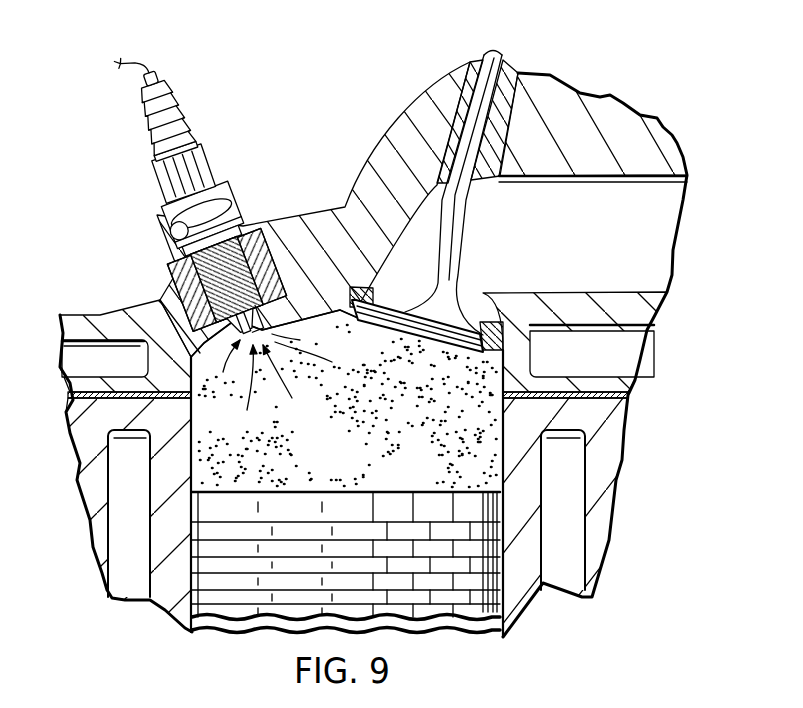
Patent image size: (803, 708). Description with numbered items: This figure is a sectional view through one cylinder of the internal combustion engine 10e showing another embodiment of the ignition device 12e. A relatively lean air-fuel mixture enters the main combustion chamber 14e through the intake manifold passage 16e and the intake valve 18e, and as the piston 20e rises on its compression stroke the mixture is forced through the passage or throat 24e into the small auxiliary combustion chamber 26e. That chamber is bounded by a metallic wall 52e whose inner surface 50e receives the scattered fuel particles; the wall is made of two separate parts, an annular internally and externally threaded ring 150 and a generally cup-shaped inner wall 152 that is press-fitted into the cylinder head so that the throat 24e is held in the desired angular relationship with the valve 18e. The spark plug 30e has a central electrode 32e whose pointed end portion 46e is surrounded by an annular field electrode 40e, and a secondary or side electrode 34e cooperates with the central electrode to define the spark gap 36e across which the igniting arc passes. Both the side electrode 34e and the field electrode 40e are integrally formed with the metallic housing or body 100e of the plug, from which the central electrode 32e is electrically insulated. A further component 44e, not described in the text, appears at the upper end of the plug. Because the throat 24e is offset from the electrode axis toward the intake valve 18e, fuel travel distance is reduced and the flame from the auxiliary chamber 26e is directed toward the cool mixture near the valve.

The internal combustion engine 10e is at (395, 321).
The ignition device 12e is at (188, 198).
The main combustion chamber 14e is at (340, 463).
The intake manifold passage 16e is at (673, 225).
The intake valve 18e is at (458, 244).
The piston 20e is at (380, 508).
The passage or throat 24e is at (248, 360).
The auxiliary combustion chamber 26e is at (285, 340).
The spark plug 30e is at (169, 133).
The central electrode 32e is at (212, 240).
The secondary or side electrode 34e is at (186, 293).
The spark gap 36e is at (226, 279).
The annular field electrode 40e is at (268, 385).
The ignition lead 44e is at (131, 66).
The pointed end portion of central electrode 46e is at (200, 278).
The inner surface of metallic wall 50e is at (105, 358).
The metallic wall 52e is at (243, 321).
The metallic body of spark plug 100e is at (201, 215).
The annular internally and externally threaded ring 150 is at (226, 279).
The cup-shaped inner wall 152 is at (249, 321).